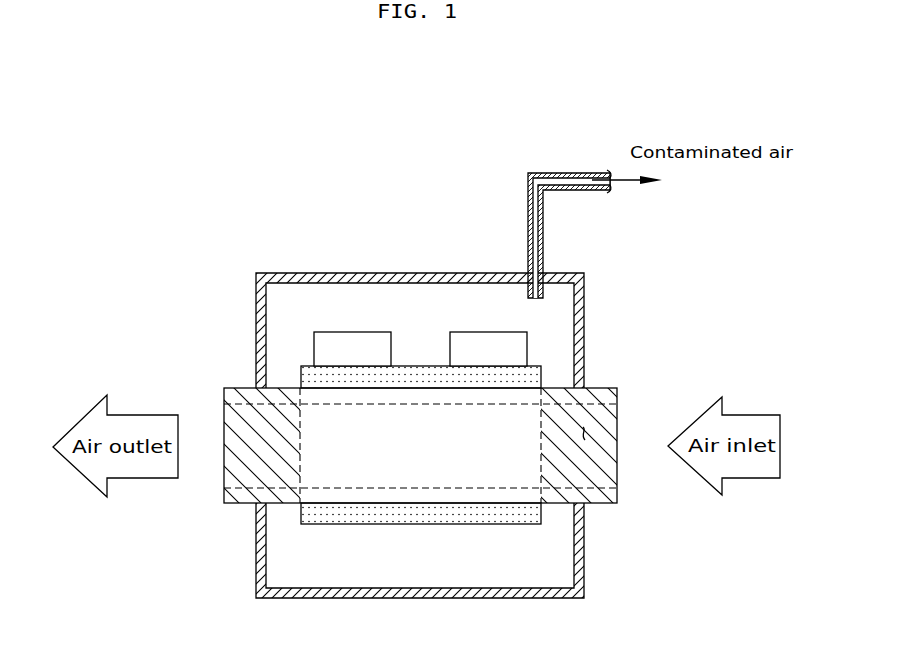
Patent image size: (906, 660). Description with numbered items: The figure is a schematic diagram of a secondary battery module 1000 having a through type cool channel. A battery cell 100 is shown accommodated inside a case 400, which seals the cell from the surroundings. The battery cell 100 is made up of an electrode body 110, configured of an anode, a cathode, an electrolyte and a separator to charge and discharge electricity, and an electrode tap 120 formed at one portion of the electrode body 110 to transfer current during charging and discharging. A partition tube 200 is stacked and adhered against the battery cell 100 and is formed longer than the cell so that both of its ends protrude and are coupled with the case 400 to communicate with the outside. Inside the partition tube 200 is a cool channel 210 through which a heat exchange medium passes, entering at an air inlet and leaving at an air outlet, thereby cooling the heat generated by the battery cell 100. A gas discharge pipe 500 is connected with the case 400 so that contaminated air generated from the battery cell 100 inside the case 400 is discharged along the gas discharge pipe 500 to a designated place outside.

The secondary battery module 1000 is at (266, 151).
The battery cell 100 is at (421, 348).
The electrode body 110 is at (424, 375).
The electrode tap 120 is at (485, 212).
The partition tube 200 is at (598, 388).
The cool channel 210 is at (597, 415).
The case 400 is at (255, 303).
The gas discharge pipe 500 is at (560, 172).